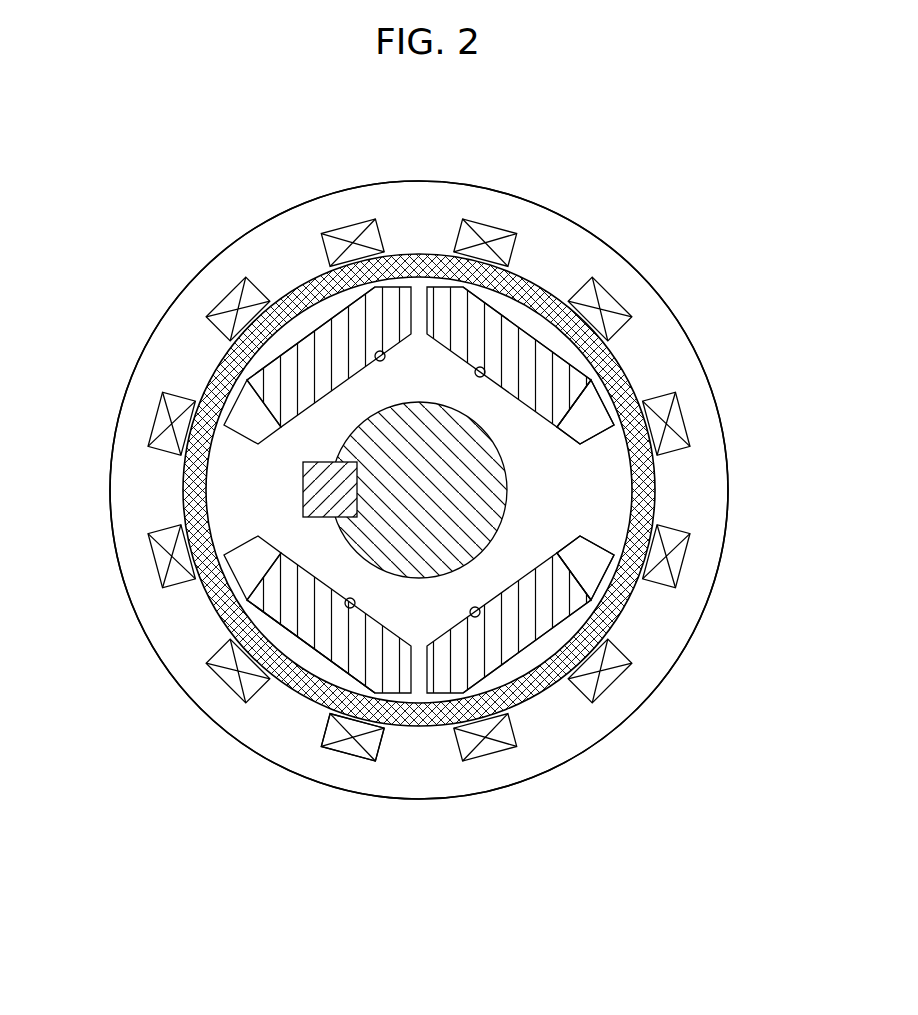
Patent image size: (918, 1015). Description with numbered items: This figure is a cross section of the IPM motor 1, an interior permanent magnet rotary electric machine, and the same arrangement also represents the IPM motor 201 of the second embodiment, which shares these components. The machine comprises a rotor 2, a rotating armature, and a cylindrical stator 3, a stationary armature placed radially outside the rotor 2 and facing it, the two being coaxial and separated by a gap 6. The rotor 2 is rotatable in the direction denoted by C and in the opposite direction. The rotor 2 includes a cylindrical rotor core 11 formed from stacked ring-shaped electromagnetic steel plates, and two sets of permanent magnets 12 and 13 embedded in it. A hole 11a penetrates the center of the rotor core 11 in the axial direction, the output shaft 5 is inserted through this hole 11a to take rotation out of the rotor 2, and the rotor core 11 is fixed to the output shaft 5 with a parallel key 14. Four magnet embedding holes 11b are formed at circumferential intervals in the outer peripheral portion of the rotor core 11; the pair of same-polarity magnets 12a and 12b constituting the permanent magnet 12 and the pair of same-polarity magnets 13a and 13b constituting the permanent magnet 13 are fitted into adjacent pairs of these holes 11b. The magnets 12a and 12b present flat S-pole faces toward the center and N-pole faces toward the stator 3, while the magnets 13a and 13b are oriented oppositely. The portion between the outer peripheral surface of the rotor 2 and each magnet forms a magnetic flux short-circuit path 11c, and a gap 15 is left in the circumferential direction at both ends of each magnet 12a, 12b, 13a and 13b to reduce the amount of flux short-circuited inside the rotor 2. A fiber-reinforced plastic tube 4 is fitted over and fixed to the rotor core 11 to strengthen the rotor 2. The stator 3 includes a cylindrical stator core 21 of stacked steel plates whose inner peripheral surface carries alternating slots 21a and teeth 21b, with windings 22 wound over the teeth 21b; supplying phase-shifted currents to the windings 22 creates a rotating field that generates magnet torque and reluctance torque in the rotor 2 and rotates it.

The IPM motor 1 is at (456, 468).
The IPM motor 201 is at (419, 490).
The rotor 2 is at (223, 530).
The stator 3 is at (700, 378).
The fiber-reinforced plastic tube 4 is at (600, 423).
The output shaft 5 is at (582, 586).
The gap 6 is at (290, 603).
The rotor core 11 is at (425, 536).
The hole 11a is at (247, 372).
The magnet embedding holes 11b is at (477, 378).
The magnetic flux short-circuit path 11c is at (540, 330).
The permanent magnet 12 is at (374, 296).
The magnet 12a is at (303, 350).
The magnet 12b is at (497, 330).
The permanent magnet 13 is at (409, 672).
The magnet 13a is at (545, 650).
The magnet 13b is at (285, 665).
The parallel key 14 is at (303, 478).
The gap 15 is at (401, 296).
The stator core 21 is at (486, 549).
The slots 21a is at (329, 764).
The teeth 21b is at (272, 705).
The windings 22 is at (358, 723).
The rotation direction C is at (312, 148).